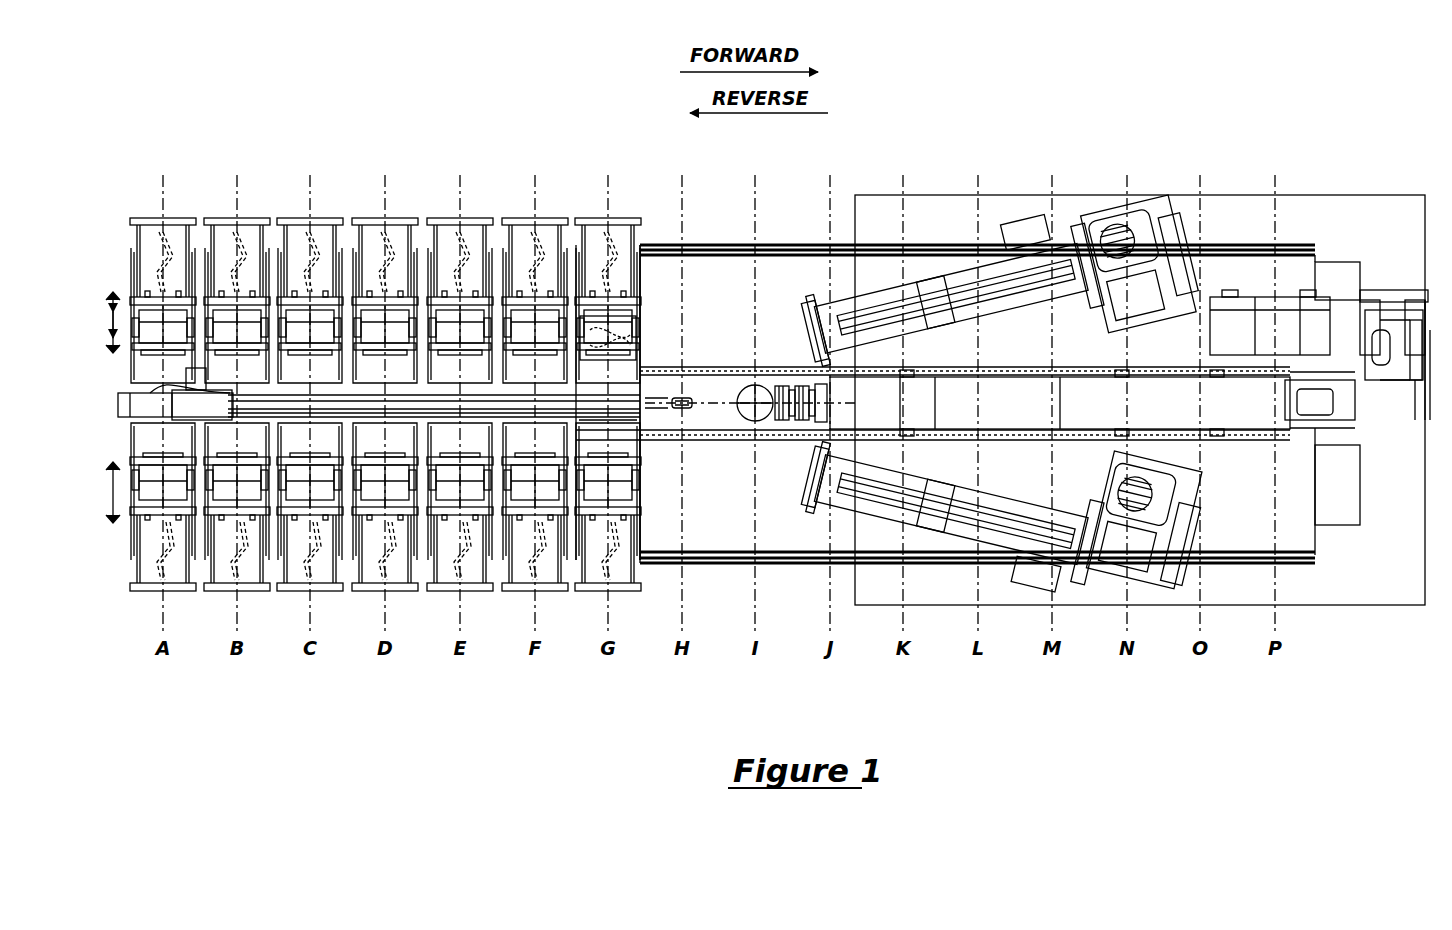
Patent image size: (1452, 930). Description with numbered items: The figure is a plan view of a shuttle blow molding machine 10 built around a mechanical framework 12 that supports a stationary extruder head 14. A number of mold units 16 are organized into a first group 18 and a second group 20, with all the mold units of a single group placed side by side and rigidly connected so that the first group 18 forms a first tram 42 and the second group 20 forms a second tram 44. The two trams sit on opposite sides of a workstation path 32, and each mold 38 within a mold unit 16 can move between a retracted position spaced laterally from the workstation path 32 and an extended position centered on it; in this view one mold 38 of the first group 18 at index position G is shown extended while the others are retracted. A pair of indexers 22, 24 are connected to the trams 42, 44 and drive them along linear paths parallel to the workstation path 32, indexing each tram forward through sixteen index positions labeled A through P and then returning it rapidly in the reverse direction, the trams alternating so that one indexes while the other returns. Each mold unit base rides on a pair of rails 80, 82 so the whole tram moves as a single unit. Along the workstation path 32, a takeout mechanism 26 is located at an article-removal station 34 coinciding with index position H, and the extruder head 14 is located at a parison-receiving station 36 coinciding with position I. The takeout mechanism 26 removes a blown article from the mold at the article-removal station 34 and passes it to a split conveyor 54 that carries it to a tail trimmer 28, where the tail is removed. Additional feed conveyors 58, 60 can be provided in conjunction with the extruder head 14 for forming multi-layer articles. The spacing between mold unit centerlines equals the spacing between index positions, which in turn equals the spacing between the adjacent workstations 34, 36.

The shuttle blow molding machine 10 is at (1248, 118).
The mechanical framework 12 is at (1355, 606).
The extruder head 14 is at (785, 432).
The mold unit 16 is at (366, 208).
The first group 18 is at (642, 103).
The second group 20 is at (642, 695).
The indexer 22 is at (1333, 260).
The indexer 24 is at (1362, 484).
The takeout mechanism 26 is at (690, 412).
The tail trimmer 28 is at (165, 395).
The workstation path 32 is at (720, 385).
The article-removal station 34 is at (686, 396).
The parison-receiving station 36 is at (760, 388).
The mold 38 is at (640, 497).
The first tram 42 is at (118, 236).
The second tram 44 is at (122, 582).
The split conveyor 54 is at (645, 385).
The feed conveyor 58 is at (928, 300).
The feed conveyor 60 is at (1010, 545).
The rail 80 is at (727, 440).
The rail 82 is at (800, 566).